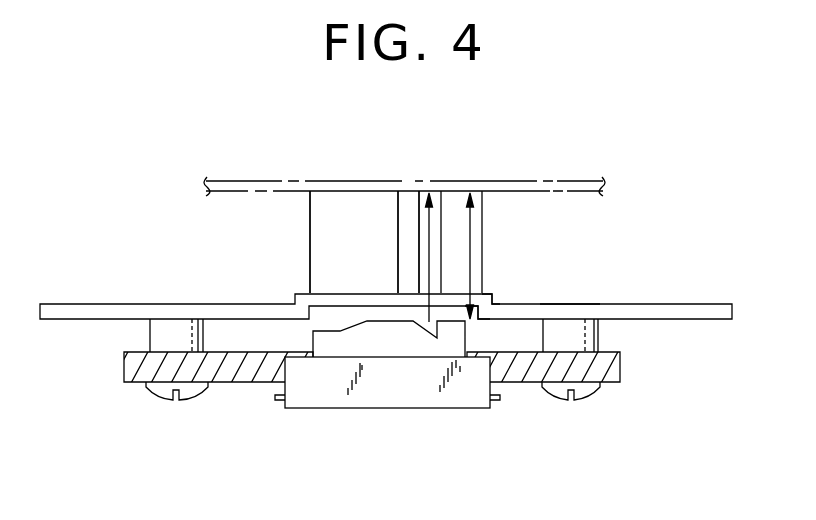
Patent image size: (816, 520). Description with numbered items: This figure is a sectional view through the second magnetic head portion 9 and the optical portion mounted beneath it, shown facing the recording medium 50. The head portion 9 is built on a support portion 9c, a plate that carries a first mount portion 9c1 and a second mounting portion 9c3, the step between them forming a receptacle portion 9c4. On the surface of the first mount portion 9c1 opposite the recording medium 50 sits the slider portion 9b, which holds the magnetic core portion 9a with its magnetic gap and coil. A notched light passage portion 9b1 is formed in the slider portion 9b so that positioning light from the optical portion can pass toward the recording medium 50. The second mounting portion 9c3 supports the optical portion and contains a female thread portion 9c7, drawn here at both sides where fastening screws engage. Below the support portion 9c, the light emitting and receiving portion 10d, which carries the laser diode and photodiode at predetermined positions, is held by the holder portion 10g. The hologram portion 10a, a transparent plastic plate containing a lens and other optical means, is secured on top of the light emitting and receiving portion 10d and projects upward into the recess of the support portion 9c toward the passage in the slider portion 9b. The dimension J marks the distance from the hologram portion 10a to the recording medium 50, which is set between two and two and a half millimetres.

The second magnetic head portion 9 is at (467, 190).
The magnetic core portion 9a is at (408, 190).
The slider portion 9b is at (343, 200).
The light passage portion 9b1 is at (435, 190).
The support portion 9c is at (653, 304).
The first mount portion 9c1 is at (481, 302).
The second mounting portion 9c3 is at (567, 304).
The receptacle portion 9c4 is at (497, 298).
The female thread portion 9c7 is at (165, 340).
The hologram portion 10a is at (317, 335).
The light emitting and receiving portion 10d is at (420, 388).
The holder portion 10g is at (620, 362).
The recording medium 50 is at (567, 181).
The distance J is at (450, 257).